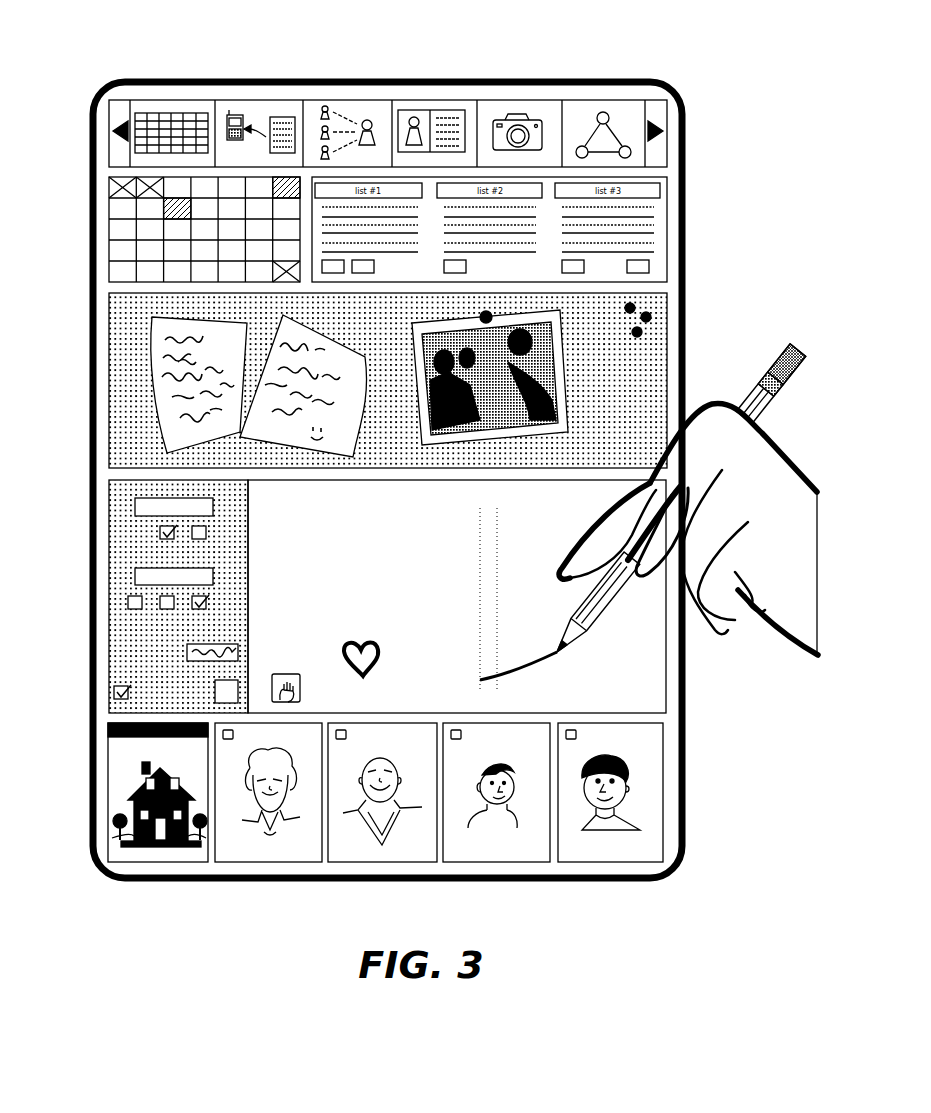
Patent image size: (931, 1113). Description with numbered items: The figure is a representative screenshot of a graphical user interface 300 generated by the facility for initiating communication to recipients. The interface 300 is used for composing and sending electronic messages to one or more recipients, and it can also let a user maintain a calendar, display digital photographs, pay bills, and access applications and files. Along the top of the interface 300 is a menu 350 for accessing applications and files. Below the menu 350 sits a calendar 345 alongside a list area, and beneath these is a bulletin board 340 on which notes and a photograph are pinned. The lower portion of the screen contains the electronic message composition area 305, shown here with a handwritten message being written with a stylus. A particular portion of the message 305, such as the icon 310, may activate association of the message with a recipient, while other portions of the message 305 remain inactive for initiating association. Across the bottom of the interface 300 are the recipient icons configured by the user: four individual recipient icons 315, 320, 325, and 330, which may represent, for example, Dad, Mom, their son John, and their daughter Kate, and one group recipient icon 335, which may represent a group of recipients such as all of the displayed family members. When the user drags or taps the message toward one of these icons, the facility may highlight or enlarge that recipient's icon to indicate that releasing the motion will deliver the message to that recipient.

The graphical user interface 300 is at (565, 80).
The electronic message composition area 305 is at (647, 693).
The icon 310 is at (282, 674).
The individual recipient icon 315 is at (238, 852).
The individual recipient icon 320 is at (350, 852).
The individual recipient icon 325 is at (468, 852).
The individual recipient icon 330 is at (577, 852).
The group recipient icon 335 is at (128, 852).
The bulletin board 340 is at (653, 357).
The calendar 345 is at (117, 210).
The menu 350 is at (655, 118).